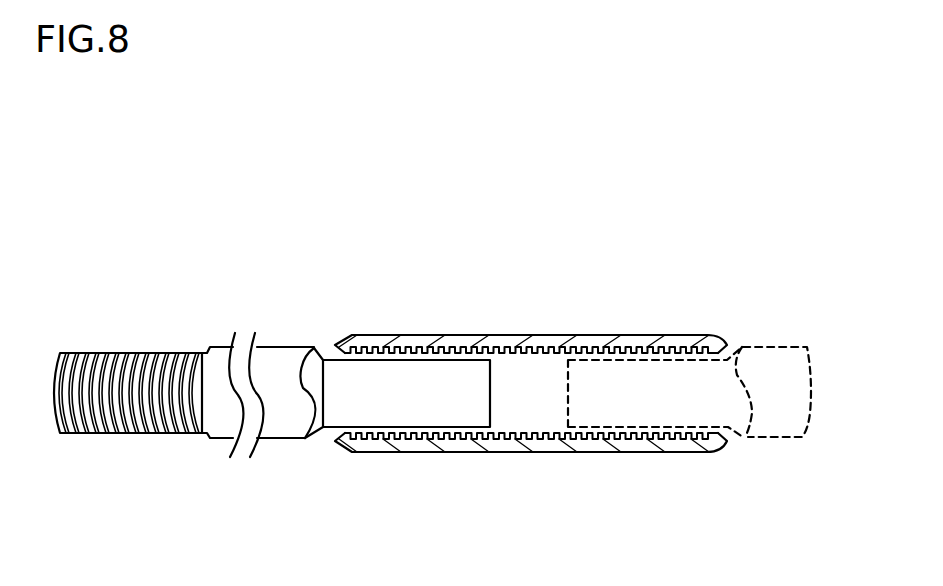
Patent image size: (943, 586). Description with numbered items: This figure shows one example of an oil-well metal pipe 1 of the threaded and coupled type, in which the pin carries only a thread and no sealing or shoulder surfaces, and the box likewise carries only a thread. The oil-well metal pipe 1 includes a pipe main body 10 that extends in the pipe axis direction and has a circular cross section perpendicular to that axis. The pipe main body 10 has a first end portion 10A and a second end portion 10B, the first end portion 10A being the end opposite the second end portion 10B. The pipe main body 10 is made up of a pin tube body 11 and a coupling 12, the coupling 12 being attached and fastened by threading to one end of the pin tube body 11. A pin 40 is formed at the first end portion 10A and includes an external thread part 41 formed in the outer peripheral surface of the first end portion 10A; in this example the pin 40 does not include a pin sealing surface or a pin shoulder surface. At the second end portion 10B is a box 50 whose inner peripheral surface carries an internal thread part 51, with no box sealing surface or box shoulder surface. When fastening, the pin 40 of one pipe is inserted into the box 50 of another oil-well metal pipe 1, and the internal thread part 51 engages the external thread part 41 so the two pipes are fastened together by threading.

The oil-well metal pipe 1 is at (409, 115).
The pipe main body 10 is at (72, 230).
The first end portion 10A is at (135, 333).
The second end portion 10B is at (659, 304).
The pin tube body 11 is at (278, 353).
The coupling 12 is at (508, 337).
The pin 40 is at (112, 447).
The external thread part 41 is at (165, 433).
The box 50 is at (642, 467).
The internal thread part 51 is at (654, 432).